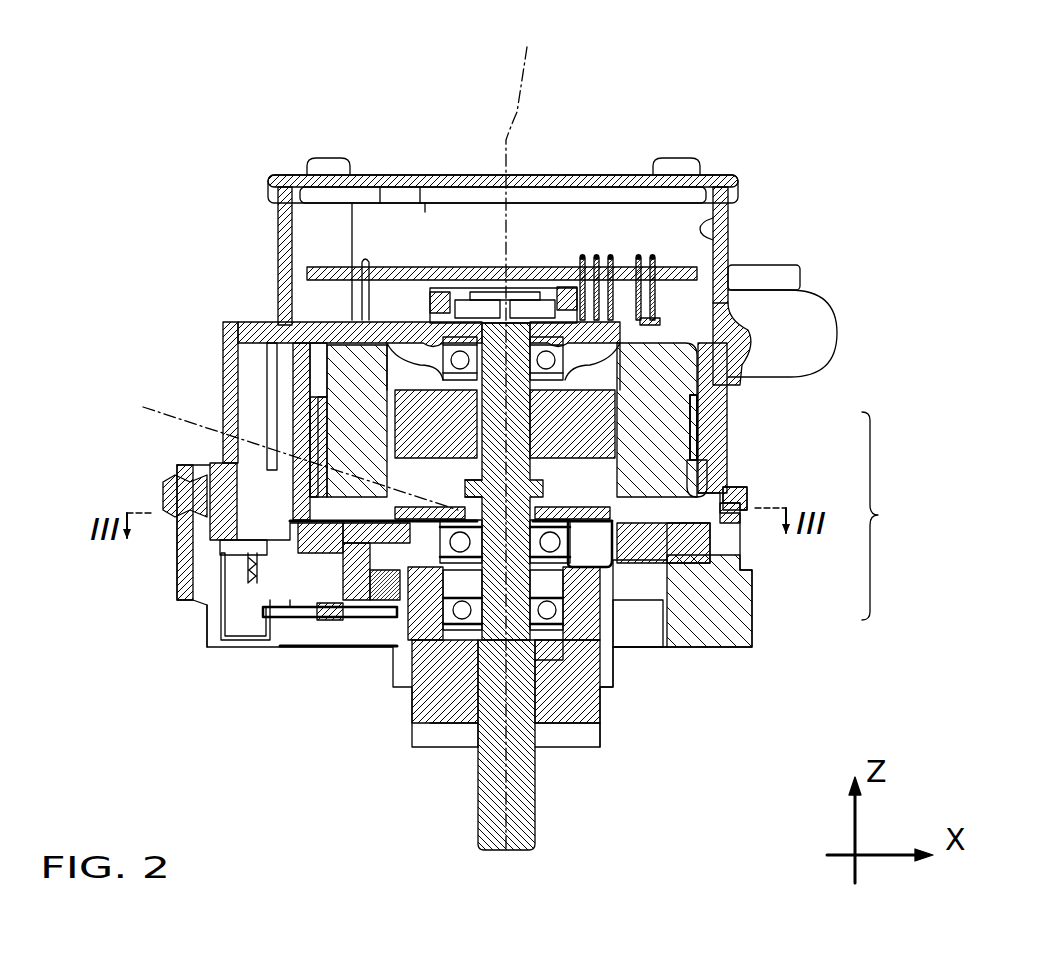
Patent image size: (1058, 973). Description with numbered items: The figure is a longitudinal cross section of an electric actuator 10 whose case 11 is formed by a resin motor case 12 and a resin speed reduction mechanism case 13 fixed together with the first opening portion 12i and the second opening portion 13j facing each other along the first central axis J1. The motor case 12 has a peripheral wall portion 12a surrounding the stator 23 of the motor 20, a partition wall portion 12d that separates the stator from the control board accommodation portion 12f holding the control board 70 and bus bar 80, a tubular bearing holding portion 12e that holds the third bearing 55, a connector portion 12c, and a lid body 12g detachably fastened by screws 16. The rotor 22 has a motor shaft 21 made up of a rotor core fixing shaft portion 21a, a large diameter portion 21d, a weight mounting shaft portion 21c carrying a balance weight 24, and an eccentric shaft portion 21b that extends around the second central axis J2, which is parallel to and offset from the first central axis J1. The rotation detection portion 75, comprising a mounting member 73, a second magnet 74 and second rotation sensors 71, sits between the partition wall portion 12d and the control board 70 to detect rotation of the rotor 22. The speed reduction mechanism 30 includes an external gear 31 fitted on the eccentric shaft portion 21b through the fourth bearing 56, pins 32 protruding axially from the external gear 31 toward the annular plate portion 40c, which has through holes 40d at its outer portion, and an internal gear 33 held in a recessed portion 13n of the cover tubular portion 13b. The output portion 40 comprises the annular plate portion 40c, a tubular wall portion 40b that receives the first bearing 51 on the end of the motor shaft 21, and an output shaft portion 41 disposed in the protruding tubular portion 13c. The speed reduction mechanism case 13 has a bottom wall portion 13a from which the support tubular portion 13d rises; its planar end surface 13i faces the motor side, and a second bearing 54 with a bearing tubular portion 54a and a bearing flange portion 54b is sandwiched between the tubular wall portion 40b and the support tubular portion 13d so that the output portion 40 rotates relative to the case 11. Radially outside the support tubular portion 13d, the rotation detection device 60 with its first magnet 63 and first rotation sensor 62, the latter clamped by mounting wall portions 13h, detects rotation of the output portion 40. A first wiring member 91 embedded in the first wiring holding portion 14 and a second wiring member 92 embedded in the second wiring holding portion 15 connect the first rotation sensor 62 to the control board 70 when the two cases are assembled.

The electric actuator 10 is at (772, 103).
The case 11 is at (883, 516).
The motor case 12 is at (589, 282).
The peripheral wall portion 12a is at (730, 407).
The connector portion 12c is at (815, 333).
The partition wall portion 12d is at (401, 198).
The bearing holding portion 12e is at (428, 202).
The control board accommodation portion 12f is at (722, 228).
The lid body 12g is at (378, 172).
The first opening portion 12i is at (735, 486).
The speed reduction mechanism case 13 is at (520, 647).
The bottom wall portion 13a is at (652, 670).
The cover tubular portion 13b is at (732, 618).
The protruding tubular portion 13c is at (597, 725).
The support tubular portion 13d is at (660, 648).
The mounting wall portion 13h is at (414, 720).
The end surface 13i is at (673, 628).
The second opening portion 13j is at (740, 500).
The recessed portion 13n is at (713, 530).
The first wiring holding portion 14 is at (222, 366).
The second wiring holding portion 15 is at (207, 650).
The screws 16 is at (324, 158).
The motor 20 is at (540, 416).
The motor shaft 21 is at (379, 355).
The rotor core fixing shaft portion 21a is at (262, 327).
The eccentric shaft portion 21b is at (222, 465).
The weight mounting shaft portion 21c is at (348, 492).
The large diameter portion 21d is at (335, 440).
The rotor 22 is at (402, 378).
The stator 23 is at (315, 355).
The balance weight 24 is at (718, 300).
The speed reduction mechanism 30 is at (460, 587).
The external gear 31 is at (697, 495).
The pins 32 is at (345, 600).
The internal gear 33 is at (695, 562).
The output portion 40 is at (541, 625).
The tubular wall portion 40b is at (575, 680).
The annular plate portion 40c is at (748, 645).
The holes 40d is at (300, 638).
The output shaft portion 41 is at (510, 848).
The first bearing 51 is at (553, 660).
The second bearing 54 is at (531, 643).
The bearing tubular portion 54a is at (612, 602).
The bearing flange portion 54b is at (640, 640).
The third bearing 55 is at (452, 266).
The fourth bearing 56 is at (168, 493).
The rotation detection device 60 is at (330, 702).
The first rotation sensor 62 is at (376, 640).
The first magnet 63 is at (366, 640).
The control board 70 is at (600, 300).
The second rotation sensors 71 is at (564, 292).
The mounting member 73 is at (478, 290).
The second magnet 74 is at (582, 294).
The rotation detection portion 75 is at (548, 290).
The bus bar 80 is at (690, 172).
The first wiring member 91 is at (237, 560).
The second wiring member 92 is at (240, 578).
The first central axis J1 is at (523, 431).
The second central axis J2 is at (281, 449).